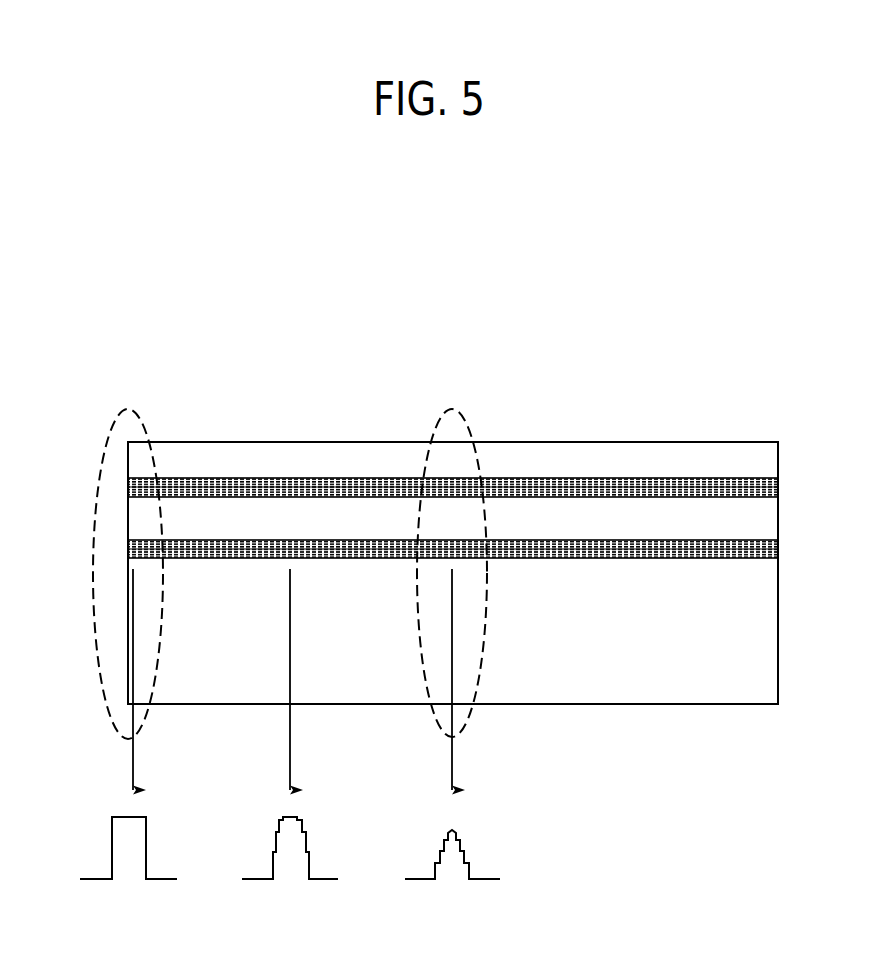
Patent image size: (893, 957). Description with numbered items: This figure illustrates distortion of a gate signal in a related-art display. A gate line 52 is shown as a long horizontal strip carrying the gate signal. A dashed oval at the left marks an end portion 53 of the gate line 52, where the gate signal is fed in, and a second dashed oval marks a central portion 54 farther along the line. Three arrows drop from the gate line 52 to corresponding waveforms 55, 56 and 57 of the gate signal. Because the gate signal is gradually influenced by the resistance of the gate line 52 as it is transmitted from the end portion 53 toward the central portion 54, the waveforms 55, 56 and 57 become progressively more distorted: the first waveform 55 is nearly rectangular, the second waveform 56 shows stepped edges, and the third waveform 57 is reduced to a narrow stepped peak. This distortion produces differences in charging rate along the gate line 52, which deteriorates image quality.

The gate line 52 is at (315, 481).
The end portion 53 is at (112, 425).
The central portion 54 is at (468, 423).
The waveform 55 is at (152, 882).
The waveform 56 is at (317, 882).
The waveform 57 is at (478, 882).